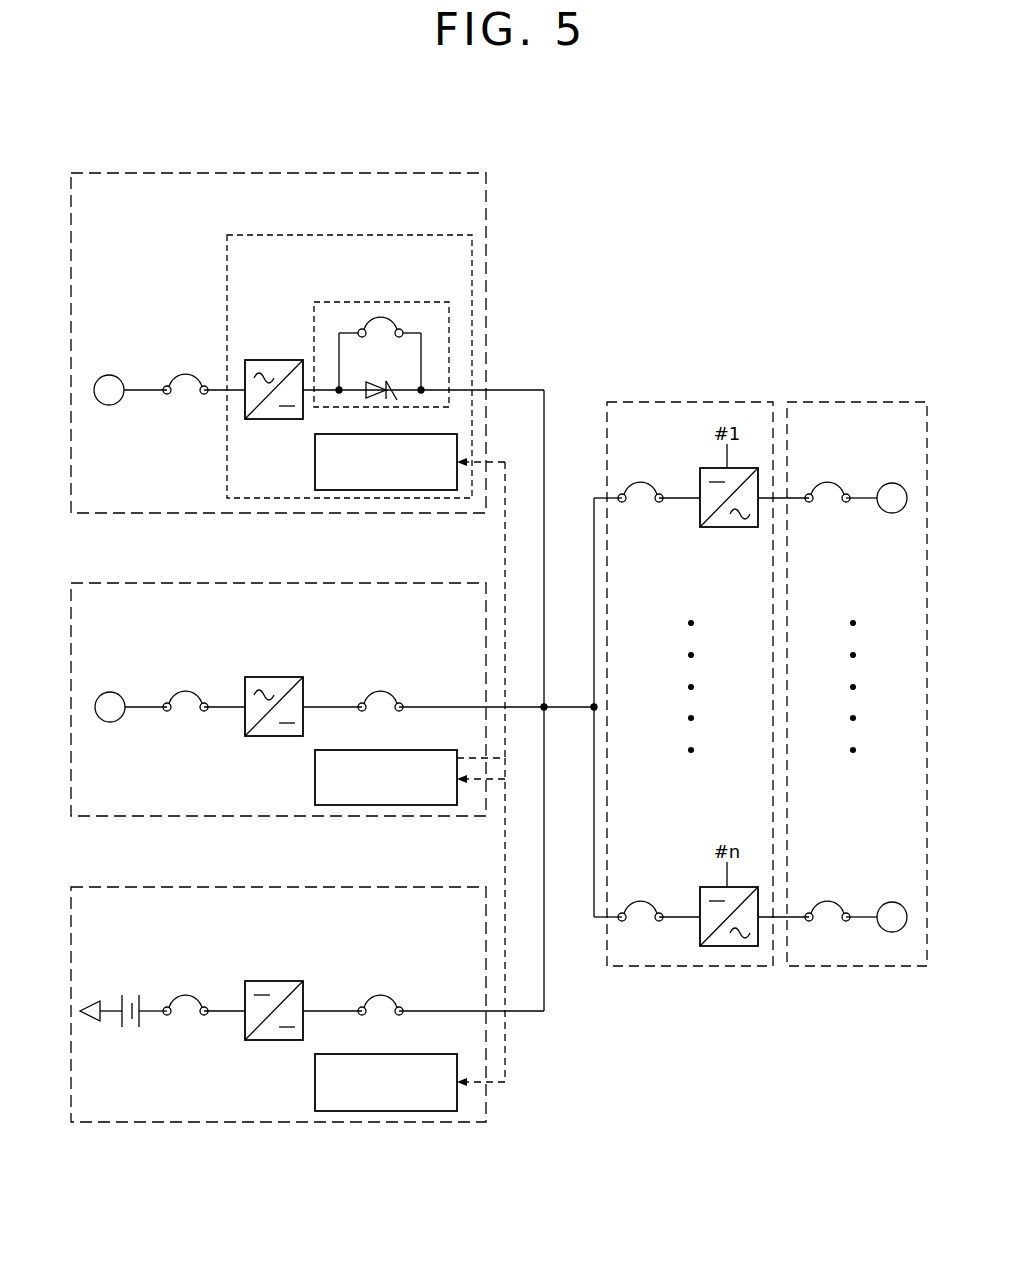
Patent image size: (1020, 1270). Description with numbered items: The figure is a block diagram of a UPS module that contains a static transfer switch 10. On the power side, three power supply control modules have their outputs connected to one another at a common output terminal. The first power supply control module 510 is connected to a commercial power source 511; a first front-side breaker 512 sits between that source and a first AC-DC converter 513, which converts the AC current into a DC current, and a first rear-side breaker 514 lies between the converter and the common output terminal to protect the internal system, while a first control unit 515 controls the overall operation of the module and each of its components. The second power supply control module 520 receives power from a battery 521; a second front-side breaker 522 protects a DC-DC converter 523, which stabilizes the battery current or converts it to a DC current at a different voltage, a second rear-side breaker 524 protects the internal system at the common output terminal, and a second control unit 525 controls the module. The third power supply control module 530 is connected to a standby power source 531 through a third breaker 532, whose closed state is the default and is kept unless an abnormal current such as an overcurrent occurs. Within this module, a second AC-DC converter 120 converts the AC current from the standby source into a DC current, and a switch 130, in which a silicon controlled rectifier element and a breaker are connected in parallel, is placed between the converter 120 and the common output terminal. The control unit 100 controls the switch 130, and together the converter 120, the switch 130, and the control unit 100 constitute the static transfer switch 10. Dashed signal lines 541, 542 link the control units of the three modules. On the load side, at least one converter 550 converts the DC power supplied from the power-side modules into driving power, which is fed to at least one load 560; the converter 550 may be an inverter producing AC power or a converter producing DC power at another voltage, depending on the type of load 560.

The static transfer switch 10 is at (353, 235).
The control unit 100 is at (315, 462).
The second AC-DC converter 120 is at (275, 360).
The switch 130 is at (385, 302).
The first power supply control module 510 is at (278, 583).
The commercial power source 511 is at (110, 692).
The first front-side breaker 512 is at (186, 694).
The first AC-DC converter 513 is at (275, 677).
The first rear-side breaker 514 is at (381, 694).
The first control unit 515 is at (315, 779).
The second power supply control module 520 is at (278, 887).
The battery 521 is at (126, 994).
The second front-side breaker 522 is at (186, 998).
The DC-DC converter 523 is at (275, 981).
The second rear-side breaker 524 is at (381, 998).
The second control unit 525 is at (315, 1082).
The third power supply control module 530 is at (278, 173).
The standby power source 531 is at (110, 375).
The third breaker 532 is at (186, 377).
The first communication line 541 is at (505, 850).
The second communication line 542 is at (505, 545).
The converter 550 is at (690, 402).
The load 560 is at (858, 402).